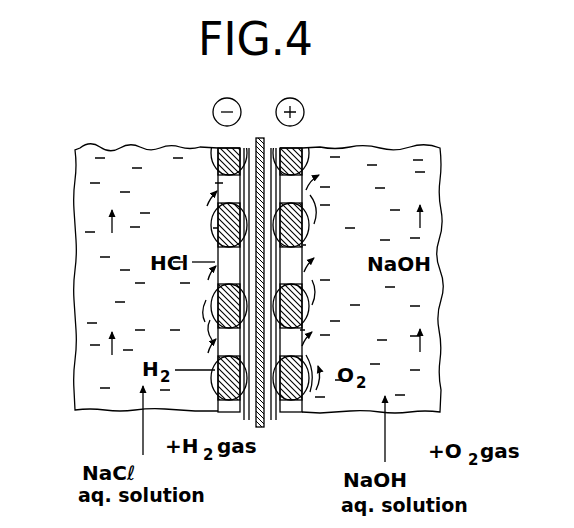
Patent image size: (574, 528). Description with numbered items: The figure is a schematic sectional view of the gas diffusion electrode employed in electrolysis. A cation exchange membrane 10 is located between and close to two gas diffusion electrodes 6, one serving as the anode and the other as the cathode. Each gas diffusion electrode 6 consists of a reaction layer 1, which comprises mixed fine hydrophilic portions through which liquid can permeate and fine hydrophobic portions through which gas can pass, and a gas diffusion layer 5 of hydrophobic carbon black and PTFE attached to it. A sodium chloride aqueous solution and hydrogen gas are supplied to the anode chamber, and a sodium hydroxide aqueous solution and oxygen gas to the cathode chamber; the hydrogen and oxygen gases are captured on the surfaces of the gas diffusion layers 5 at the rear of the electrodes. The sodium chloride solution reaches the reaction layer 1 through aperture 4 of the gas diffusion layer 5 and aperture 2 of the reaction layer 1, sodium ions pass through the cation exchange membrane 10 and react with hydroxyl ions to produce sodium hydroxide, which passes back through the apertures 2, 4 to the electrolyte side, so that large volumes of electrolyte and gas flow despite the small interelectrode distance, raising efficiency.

The reaction layer 1 is at (213, 227).
The circular aperture 2 is at (215, 327).
The aperture 4 is at (223, 183).
The gas diffusion layer 5 is at (213, 228).
The gas diffusion electrode 6 is at (222, 146).
The cation exchange membrane 10 is at (265, 428).